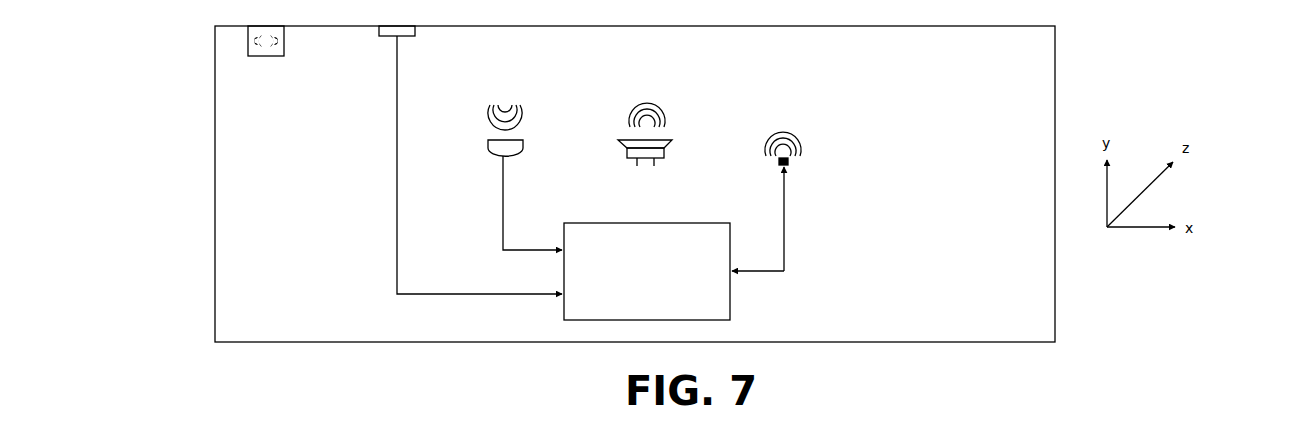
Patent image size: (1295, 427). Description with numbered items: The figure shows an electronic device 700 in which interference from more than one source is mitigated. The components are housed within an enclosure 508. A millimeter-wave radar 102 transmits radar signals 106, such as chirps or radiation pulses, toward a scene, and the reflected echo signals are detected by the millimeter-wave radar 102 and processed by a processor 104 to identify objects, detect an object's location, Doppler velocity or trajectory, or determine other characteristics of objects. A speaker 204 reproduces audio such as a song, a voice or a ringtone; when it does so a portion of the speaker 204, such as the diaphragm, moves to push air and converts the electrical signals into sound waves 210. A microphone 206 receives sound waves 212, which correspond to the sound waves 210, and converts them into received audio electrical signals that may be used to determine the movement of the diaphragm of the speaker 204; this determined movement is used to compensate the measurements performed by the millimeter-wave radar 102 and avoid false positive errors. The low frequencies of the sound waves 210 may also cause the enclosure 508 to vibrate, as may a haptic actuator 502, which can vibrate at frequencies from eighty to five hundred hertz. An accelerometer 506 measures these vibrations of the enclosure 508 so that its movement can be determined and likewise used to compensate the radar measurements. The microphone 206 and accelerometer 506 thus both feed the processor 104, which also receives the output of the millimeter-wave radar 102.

The electronic device 700 is at (106, 61).
The enclosure 508 is at (742, 26).
The haptic actuator 502 is at (284, 40).
The accelerometer 506 is at (415, 36).
The sound waves 212 is at (533, 96).
The microphone 206 is at (523, 150).
The sound waves 210 is at (668, 96).
The speaker 204 is at (664, 152).
The radar signals 106 is at (803, 121).
The millimeter-wave radar 102 is at (790, 162).
The processor 104 is at (678, 223).